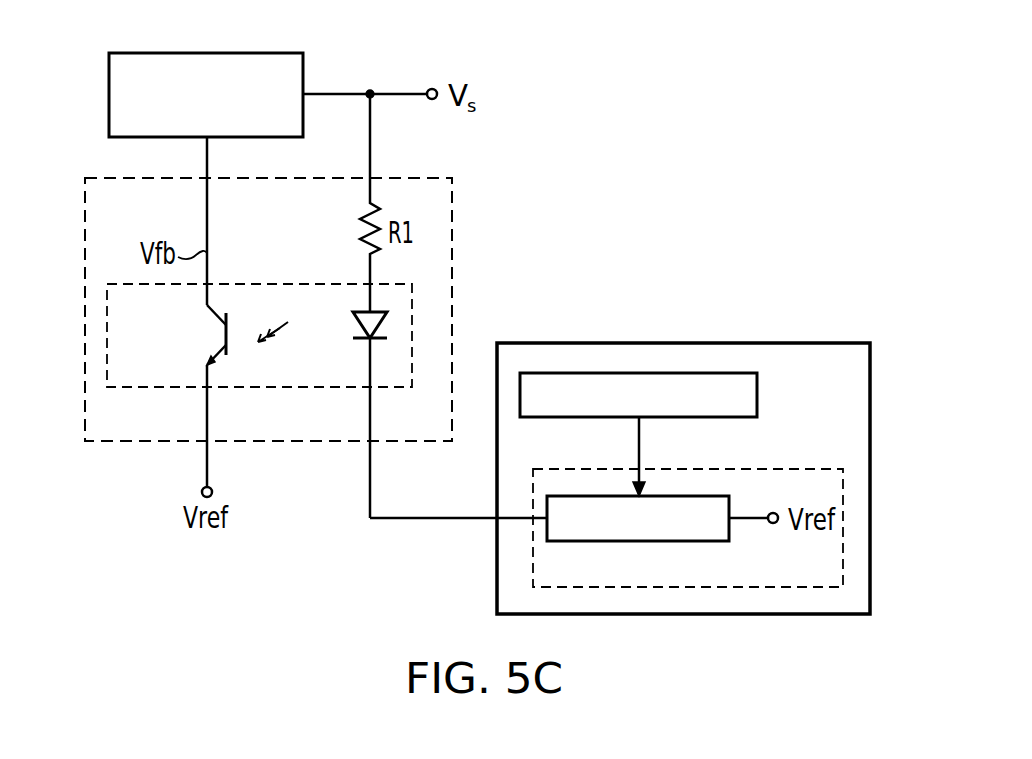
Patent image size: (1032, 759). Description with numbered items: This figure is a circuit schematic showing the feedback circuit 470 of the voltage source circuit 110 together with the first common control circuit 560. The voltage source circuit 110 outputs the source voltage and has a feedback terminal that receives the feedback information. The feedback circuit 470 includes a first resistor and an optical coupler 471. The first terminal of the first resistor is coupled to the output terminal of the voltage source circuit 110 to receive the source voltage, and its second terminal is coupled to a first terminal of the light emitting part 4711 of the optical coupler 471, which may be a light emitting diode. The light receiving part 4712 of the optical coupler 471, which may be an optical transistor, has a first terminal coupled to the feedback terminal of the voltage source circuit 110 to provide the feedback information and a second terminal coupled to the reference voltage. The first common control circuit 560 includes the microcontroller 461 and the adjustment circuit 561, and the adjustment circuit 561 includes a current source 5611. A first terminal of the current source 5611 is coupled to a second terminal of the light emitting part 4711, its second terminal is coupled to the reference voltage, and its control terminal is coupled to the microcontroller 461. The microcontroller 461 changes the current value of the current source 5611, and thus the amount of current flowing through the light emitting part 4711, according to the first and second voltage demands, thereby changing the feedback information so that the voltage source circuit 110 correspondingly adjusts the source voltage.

The voltage source circuit 110 is at (235, 53).
The feedback circuit 470 is at (156, 443).
The optical coupler 471 is at (162, 388).
The light emitting part 4711 is at (357, 318).
The light receiving part 4712 is at (207, 335).
The first common control circuit 560 is at (797, 343).
The microcontroller 461 is at (676, 418).
The adjustment circuit 561 is at (790, 469).
The current source 5611 is at (675, 542).